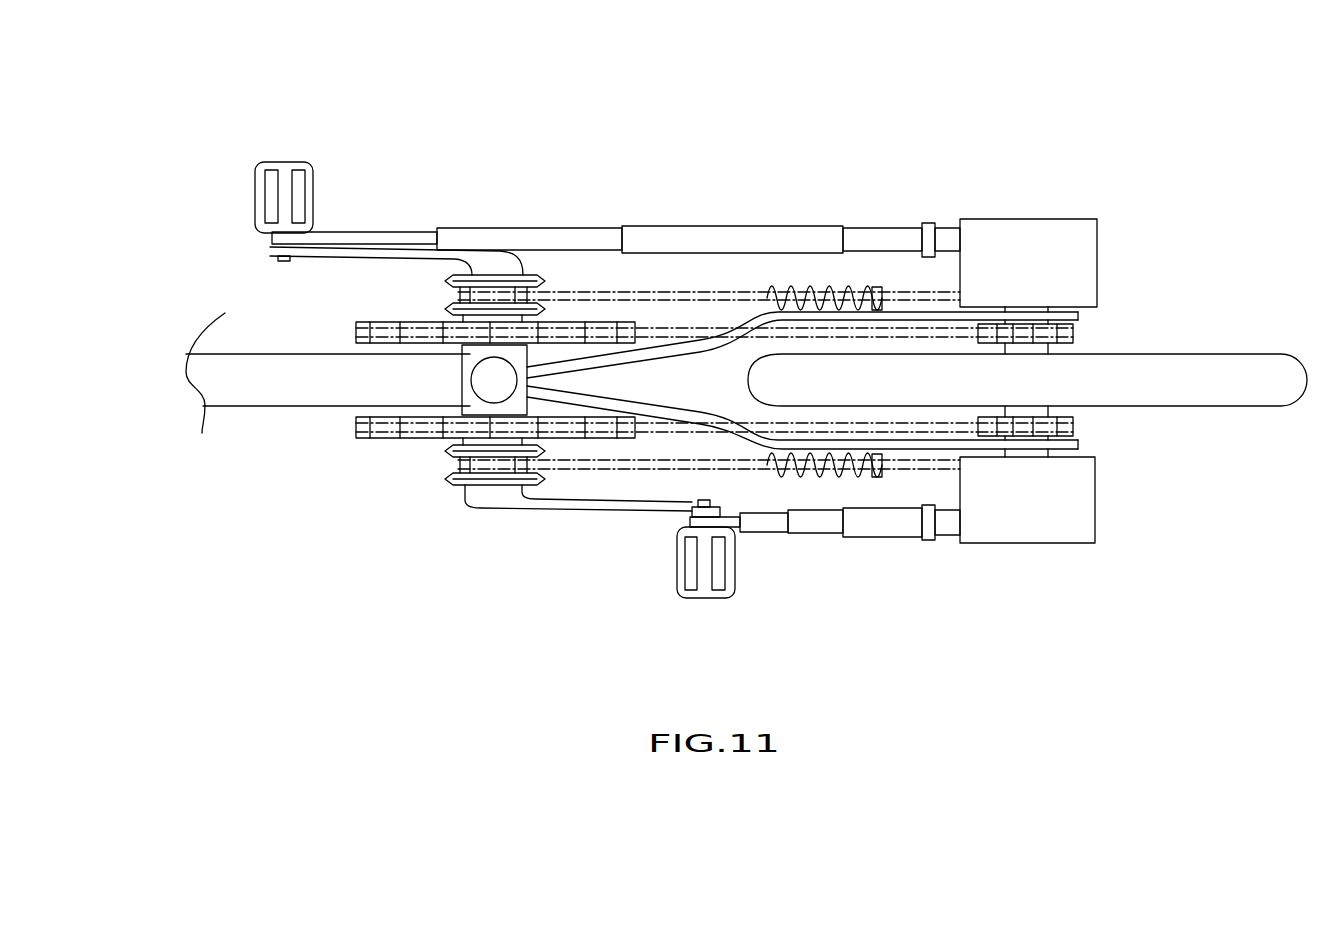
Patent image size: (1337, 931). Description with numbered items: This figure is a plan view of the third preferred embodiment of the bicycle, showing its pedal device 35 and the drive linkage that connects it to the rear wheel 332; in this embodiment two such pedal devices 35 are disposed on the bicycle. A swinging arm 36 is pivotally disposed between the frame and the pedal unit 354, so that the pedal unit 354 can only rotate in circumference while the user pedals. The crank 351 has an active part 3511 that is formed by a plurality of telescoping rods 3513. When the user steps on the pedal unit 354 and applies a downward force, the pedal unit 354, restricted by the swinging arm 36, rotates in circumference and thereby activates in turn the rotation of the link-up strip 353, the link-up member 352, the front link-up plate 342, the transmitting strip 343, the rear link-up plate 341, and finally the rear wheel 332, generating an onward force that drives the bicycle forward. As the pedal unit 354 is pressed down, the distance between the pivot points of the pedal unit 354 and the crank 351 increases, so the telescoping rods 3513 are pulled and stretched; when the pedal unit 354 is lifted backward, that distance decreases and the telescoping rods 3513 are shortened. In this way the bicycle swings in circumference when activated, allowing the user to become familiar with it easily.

The pedal device 35 is at (253, 191).
The swinging arm 36 is at (382, 257).
The rear wheel 332 is at (1204, 372).
The rear link-up plate 341 is at (1080, 420).
The front link-up plate 342 is at (361, 440).
The transmitting strip 343 is at (669, 428).
The crank 351 is at (1097, 483).
The link-up member 352 is at (450, 486).
The link-up strip 353 is at (640, 465).
The pedal unit 354 is at (285, 167).
The active part 3511 is at (635, 224).
The telescoping rods 3513 is at (697, 237).